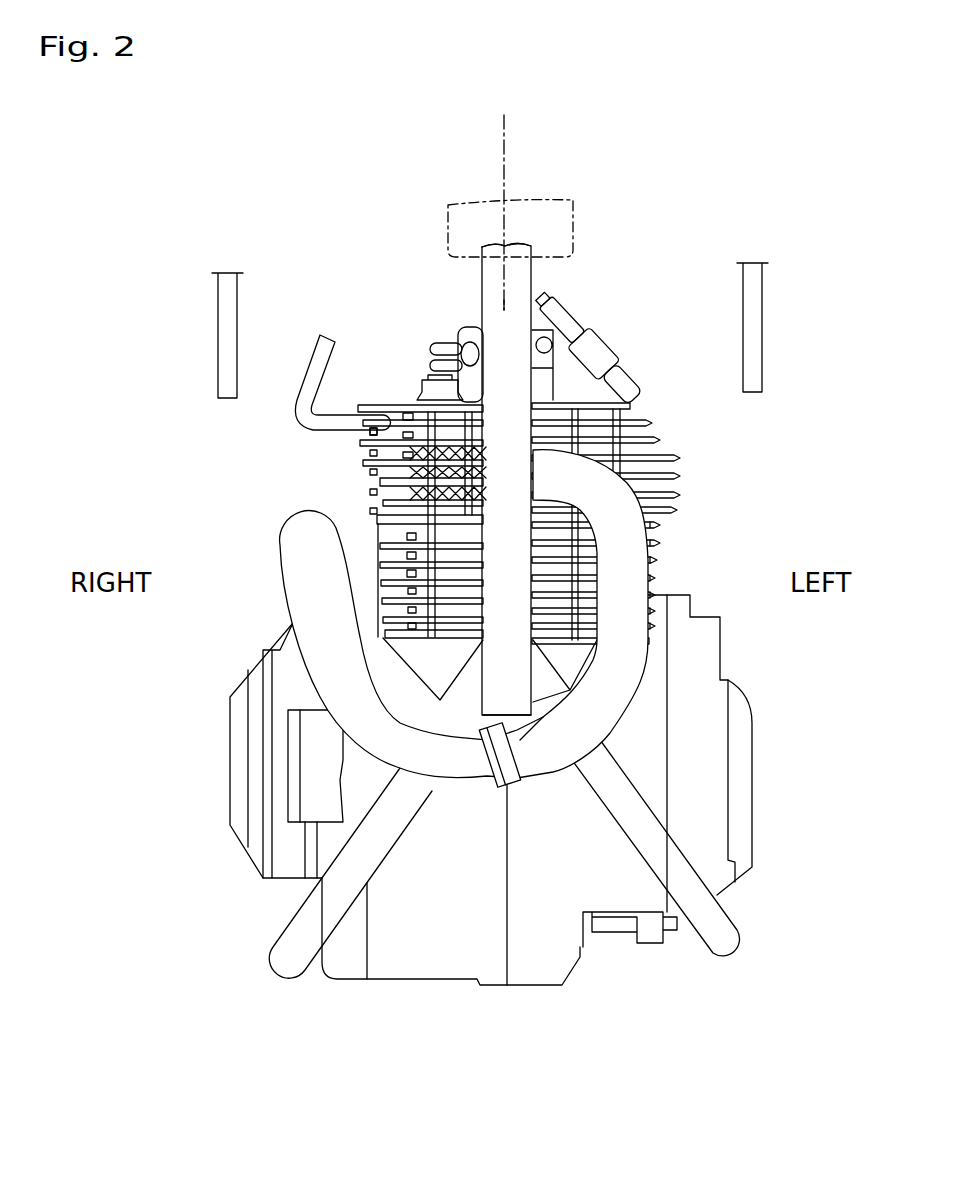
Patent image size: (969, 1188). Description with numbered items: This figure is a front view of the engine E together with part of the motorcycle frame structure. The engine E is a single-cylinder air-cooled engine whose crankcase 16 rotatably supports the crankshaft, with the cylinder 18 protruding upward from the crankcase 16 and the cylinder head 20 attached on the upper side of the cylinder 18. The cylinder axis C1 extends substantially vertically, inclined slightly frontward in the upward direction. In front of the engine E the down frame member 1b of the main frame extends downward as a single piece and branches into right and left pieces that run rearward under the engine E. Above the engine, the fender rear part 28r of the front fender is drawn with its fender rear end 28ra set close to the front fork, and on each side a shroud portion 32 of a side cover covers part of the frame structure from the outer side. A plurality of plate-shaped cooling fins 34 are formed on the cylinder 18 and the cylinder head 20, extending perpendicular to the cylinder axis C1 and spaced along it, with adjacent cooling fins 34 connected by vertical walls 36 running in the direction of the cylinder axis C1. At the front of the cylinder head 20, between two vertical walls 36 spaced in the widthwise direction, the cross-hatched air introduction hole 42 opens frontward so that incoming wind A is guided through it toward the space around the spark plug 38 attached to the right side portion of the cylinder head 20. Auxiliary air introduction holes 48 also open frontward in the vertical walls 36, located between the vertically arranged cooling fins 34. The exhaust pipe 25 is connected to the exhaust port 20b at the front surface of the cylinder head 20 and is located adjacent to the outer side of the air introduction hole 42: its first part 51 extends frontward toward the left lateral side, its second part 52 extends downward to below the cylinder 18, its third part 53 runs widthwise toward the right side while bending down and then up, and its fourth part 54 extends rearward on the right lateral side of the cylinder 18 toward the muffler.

The down frame member 1b is at (506, 415).
The crankcase 16 is at (380, 952).
The cylinder 18 is at (293, 640).
The cylinder head 20 is at (370, 487).
The exhaust port 20b is at (660, 520).
The exhaust pipe 25 is at (472, 799).
The front fender rear part 28r is at (575, 205).
The fender rear end 28ra is at (562, 258).
The shroud portion 32 is at (222, 310).
The cooling fin 34 is at (665, 450).
The vertical wall 36 is at (430, 417).
The spark plug 38 is at (340, 418).
The air introduction hole 42 is at (373, 500).
The auxiliary air introduction hole 48 is at (370, 436).
The first part 51 is at (587, 393).
The second part 52 is at (627, 678).
The third part 53 is at (537, 757).
The fourth part 54 is at (300, 518).
The cylinder axis C1 is at (512, 138).
The engine E is at (577, 985).
The incoming wind A is at (492, 479).